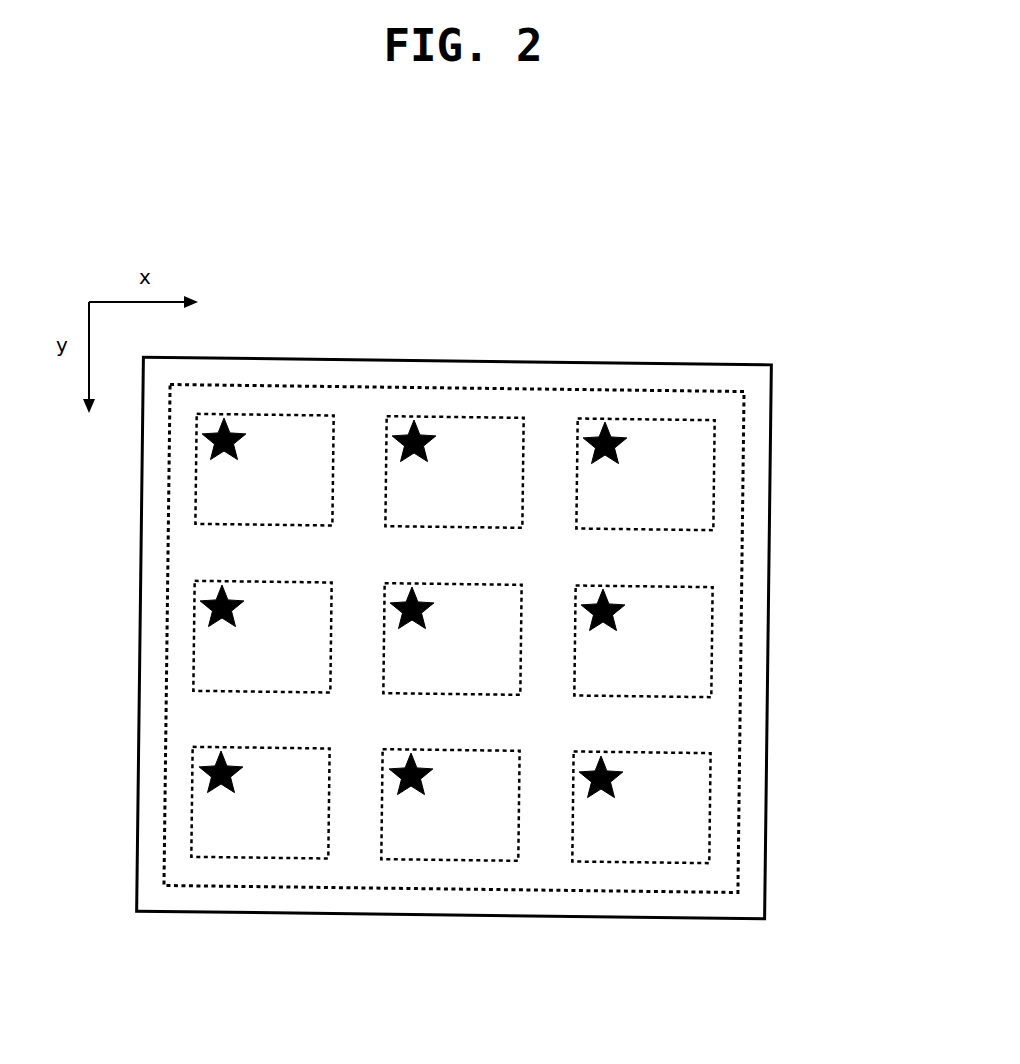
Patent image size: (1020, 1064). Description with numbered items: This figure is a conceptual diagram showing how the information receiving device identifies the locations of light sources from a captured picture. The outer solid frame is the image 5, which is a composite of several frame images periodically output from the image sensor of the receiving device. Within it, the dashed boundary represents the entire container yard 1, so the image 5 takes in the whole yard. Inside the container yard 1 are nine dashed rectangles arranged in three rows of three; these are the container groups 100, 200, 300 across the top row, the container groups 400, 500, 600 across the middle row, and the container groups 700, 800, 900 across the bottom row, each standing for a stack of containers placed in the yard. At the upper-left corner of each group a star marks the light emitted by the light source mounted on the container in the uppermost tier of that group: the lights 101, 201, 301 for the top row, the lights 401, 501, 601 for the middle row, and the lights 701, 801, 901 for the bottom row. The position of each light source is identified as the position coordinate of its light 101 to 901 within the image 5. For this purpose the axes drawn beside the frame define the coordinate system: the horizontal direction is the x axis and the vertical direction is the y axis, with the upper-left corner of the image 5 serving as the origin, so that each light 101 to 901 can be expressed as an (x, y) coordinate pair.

The container yard 1 is at (743, 497).
The image 5 is at (770, 402).
The container group 100 is at (247, 417).
The light 101 is at (207, 418).
The container group 200 is at (440, 417).
The light 201 is at (403, 420).
The container group 300 is at (630, 417).
The light 301 is at (593, 422).
The container group 400 is at (195, 652).
The light 401 is at (207, 605).
The container group 500 is at (392, 697).
The light 501 is at (398, 604).
The container group 600 is at (714, 661).
The light 601 is at (623, 610).
The container group 700 is at (274, 858).
The light 701 is at (216, 792).
The container group 800 is at (465, 862).
The light 801 is at (405, 792).
The container group 900 is at (658, 866).
The light 901 is at (598, 795).